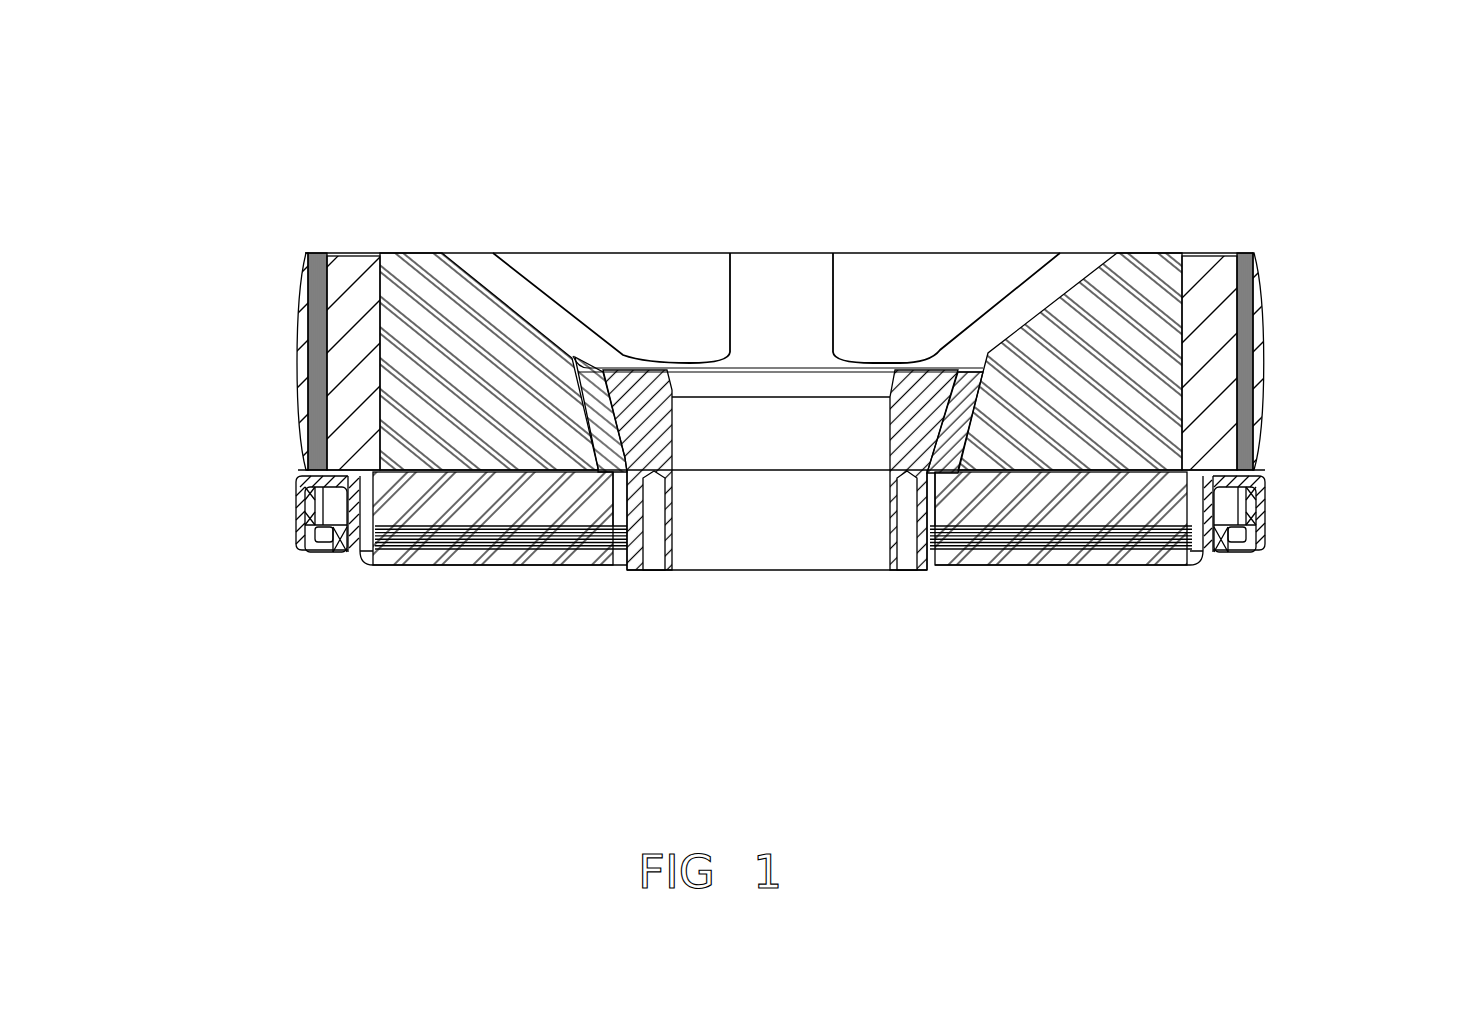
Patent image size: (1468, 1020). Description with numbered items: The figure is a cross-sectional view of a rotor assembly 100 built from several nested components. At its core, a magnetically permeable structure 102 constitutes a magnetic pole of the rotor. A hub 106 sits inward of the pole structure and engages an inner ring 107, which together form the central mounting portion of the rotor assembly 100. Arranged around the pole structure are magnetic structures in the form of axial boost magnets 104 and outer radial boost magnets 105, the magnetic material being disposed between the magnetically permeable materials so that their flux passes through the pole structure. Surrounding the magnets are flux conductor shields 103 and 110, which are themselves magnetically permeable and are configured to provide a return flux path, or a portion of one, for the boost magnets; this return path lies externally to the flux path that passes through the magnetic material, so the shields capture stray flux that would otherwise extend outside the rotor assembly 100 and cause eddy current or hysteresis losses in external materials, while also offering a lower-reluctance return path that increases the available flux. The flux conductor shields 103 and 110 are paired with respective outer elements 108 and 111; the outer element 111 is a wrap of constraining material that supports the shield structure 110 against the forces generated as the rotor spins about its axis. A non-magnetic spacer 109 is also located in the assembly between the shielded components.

The rotor assembly 100 is at (672, 260).
The magnetically permeable structure 102 is at (455, 355).
The flux conductor shield 103 is at (1085, 528).
The axial boost magnet 104 is at (1117, 495).
The outer radial boost magnet 105 is at (1207, 290).
The hub 106 is at (888, 443).
The inner ring 107 is at (783, 318).
The outer element 108 is at (973, 568).
The non-magnetic spacer 109 is at (1197, 523).
The flux conductor shield 110 is at (1248, 307).
The wrap of constraining material 111 is at (1263, 387).